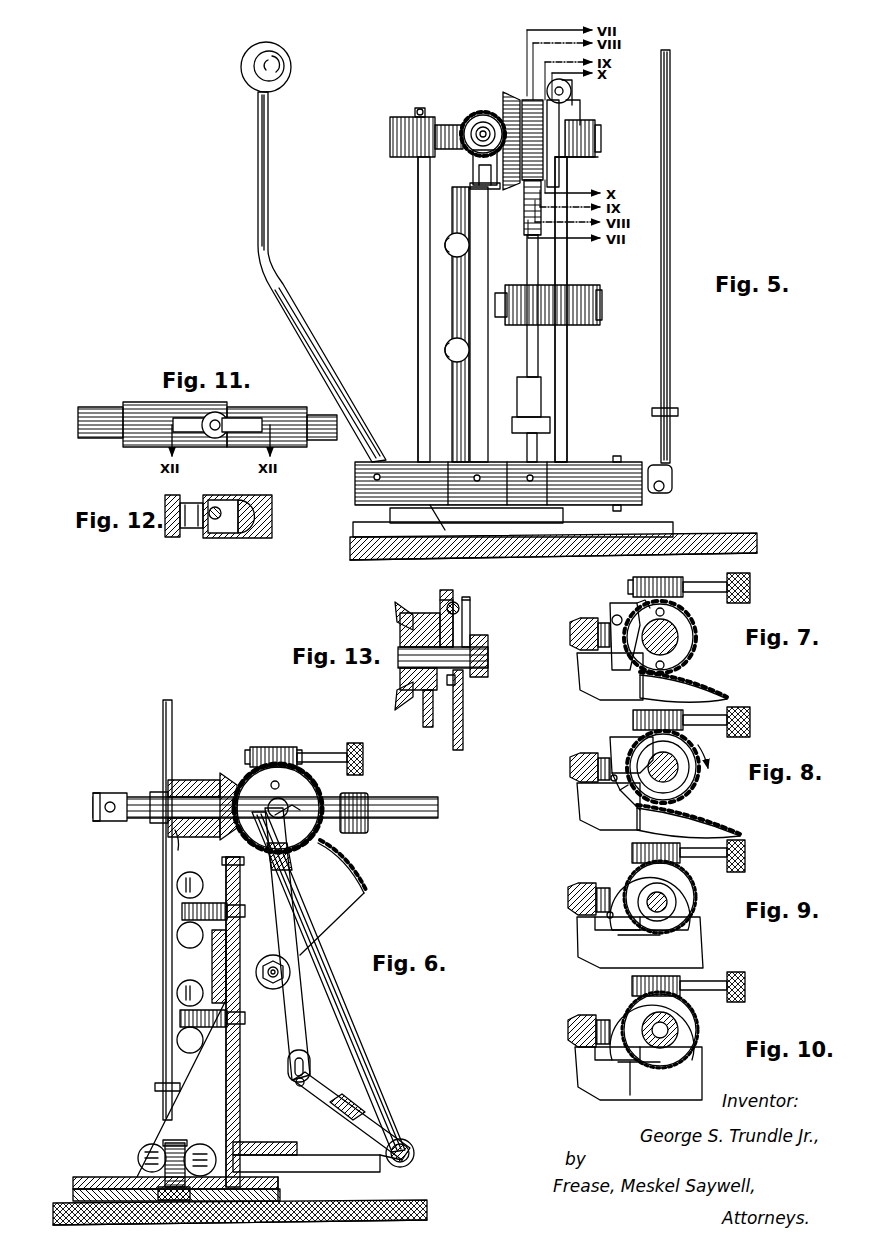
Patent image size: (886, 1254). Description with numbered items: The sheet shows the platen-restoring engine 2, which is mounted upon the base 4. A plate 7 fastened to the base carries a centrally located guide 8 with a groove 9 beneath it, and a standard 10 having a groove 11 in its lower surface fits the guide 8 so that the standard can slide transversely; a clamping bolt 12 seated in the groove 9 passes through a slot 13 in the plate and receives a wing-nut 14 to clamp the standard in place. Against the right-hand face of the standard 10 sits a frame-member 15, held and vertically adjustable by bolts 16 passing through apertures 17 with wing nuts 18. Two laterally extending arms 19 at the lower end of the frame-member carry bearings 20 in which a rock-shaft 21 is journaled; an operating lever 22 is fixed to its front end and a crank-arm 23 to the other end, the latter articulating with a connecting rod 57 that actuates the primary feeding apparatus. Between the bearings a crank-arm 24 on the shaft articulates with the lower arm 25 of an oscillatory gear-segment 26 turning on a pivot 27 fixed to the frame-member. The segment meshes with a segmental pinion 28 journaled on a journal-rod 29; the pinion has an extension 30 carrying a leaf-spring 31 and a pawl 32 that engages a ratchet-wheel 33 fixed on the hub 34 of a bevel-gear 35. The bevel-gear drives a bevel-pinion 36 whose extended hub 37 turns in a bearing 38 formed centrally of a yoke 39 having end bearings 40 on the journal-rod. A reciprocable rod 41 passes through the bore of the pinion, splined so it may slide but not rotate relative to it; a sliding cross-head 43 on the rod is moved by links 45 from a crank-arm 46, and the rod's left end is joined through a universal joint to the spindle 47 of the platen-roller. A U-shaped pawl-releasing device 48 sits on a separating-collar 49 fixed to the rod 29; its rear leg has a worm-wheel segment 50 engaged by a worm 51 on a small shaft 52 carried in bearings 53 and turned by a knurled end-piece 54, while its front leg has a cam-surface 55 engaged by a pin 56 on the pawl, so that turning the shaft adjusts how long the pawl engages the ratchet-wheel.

In FIG. 5, the engine 2 is at (400, 309).
In FIG. 6, the engine 2 is at (164, 1022).
In FIG. 5, the base 4 is at (752, 545).
In FIG. 6, the base 4 is at (432, 1213).
In FIG. 5, the plate 7 is at (700, 538).
In FIG. 6, the plate 7 is at (300, 1207).
In FIG. 5, the guide 8 is at (660, 522).
In FIG. 6, the guide 8 is at (280, 1183).
In FIG. 6, the groove 9 is at (135, 1192).
In FIG. 5, the standard 10 is at (505, 523).
In FIG. 6, the standard 10 is at (200, 1100).
In FIG. 6, the groove 11 is at (73, 1183).
In FIG. 6, the clamping bolt 12 is at (170, 1143).
In FIG. 6, the slot 13 is at (240, 1142).
In FIG. 6, the wing-nut 14 is at (140, 1150).
In FIG. 5, the frame-member 15 is at (452, 298).
In FIG. 7, the frame-member 15 is at (582, 680).
In FIG. 8, the frame-member 15 is at (582, 815).
In FIG. 9, the frame-member 15 is at (586, 950).
In FIG. 10, the frame-member 15 is at (586, 1083).
In FIG. 6, the frame-member 15 is at (288, 1065).
In FIG. 5, the bolts 16 is at (445, 248).
In FIG. 6, the bolts 16 is at (182, 910).
In FIG. 6, the apertures 17 is at (212, 945).
In FIG. 6, the wing nuts 18 is at (177, 885).
In FIG. 5, the laterally extending arms 19 is at (418, 330).
In FIG. 6, the laterally extending arms 19 is at (355, 1172).
In FIG. 5, the bearings 20 is at (432, 505).
In FIG. 5, the rock-shaft 21 is at (355, 486).
In FIG. 6, the rock-shaft 21 is at (415, 1153).
In FIG. 5, the operating lever 22 is at (256, 150).
In FIG. 5, the crank-arm 23 is at (665, 465).
In FIG. 6, the crank-arm 23 is at (380, 1160).
In FIG. 5, the crank-arm 24 is at (542, 442).
In FIG. 6, the crank-arm 24 is at (360, 1118).
In FIG. 5, the lower arm 25 is at (540, 342).
In FIG. 6, the lower arm 25 is at (300, 1012).
In FIG. 5, the oscillatory gear-segment 26 is at (540, 262).
In FIG. 13, the oscillatory gear-segment 26 is at (428, 727).
In FIG. 7, the oscillatory gear-segment 26 is at (727, 690).
In FIG. 8, the oscillatory gear-segment 26 is at (735, 825).
In FIG. 6, the oscillatory gear-segment 26 is at (367, 893).
In FIG. 5, the pivot 27 is at (603, 305).
In FIG. 6, the pivot 27 is at (290, 968).
In FIG. 5, the segmental pinion 28 is at (536, 100).
In FIG. 13, the segmental pinion 28 is at (447, 598).
In FIG. 8, the segmental pinion 28 is at (700, 775).
In FIG. 5, the journal-rod 29 is at (604, 136).
In FIG. 13, the journal-rod 29 is at (488, 657).
In FIG. 7, the journal-rod 29 is at (700, 637).
In FIG. 8, the journal-rod 29 is at (680, 767).
In FIG. 9, the journal-rod 29 is at (668, 902).
In FIG. 10, the journal-rod 29 is at (678, 1030).
In FIG. 7, the extension 30 is at (636, 605).
In FIG. 8, the extension 30 is at (612, 782).
In FIG. 7, the leaf-spring 31 is at (610, 615).
In FIG. 8, the leaf-spring 31 is at (610, 748).
In FIG. 7, the pawl 32 is at (610, 650).
In FIG. 5, the ratchet-wheel 33 is at (527, 100).
In FIG. 13, the ratchet-wheel 33 is at (440, 600).
In FIG. 7, the ratchet-wheel 33 is at (697, 620).
In FIG. 13, the hub 34 is at (400, 673).
In FIG. 7, the hub 34 is at (690, 661).
In FIG. 5, the bevel-gear 35 is at (507, 100).
In FIG. 13, the bevel-gear 35 is at (397, 702).
In FIG. 6, the bevel-gear 35 is at (308, 770).
In FIG. 5, the bevel-pinion 36 is at (470, 115).
In FIG. 6, the bevel-pinion 36 is at (228, 773).
In FIG. 6, the extended hub 37 is at (202, 780).
In FIG. 6, the bearing 38 is at (185, 780).
In FIG. 5, the yoke 39 is at (442, 128).
In FIG. 7, the yoke 39 is at (570, 632).
In FIG. 8, the yoke 39 is at (570, 768).
In FIG. 9, the yoke 39 is at (568, 898).
In FIG. 10, the yoke 39 is at (568, 1033).
In FIG. 6, the yoke 39 is at (175, 835).
In FIG. 5, the end bearings 40 is at (395, 160).
In FIG. 5, the reciprocable rod 41 is at (478, 175).
In FIG. 11, the reciprocable rod 41 is at (325, 440).
In FIG. 6, the reciprocable rod 41 is at (435, 818).
In FIG. 6, the sliding cross-head 43 is at (368, 805).
In FIG. 6, the links 45 is at (310, 820).
In FIG. 5, the crank-arm 46 is at (470, 276).
In FIG. 6, the crank-arm 46 is at (362, 1048).
In FIG. 11, the spindle 47 is at (95, 407).
In FIG. 5, the pawl-releasing device 48 is at (560, 192).
In FIG. 13, the pawl-releasing device 48 is at (458, 750).
In FIG. 9, the pawl-releasing device 48 is at (625, 935).
In FIG. 10, the pawl-releasing device 48 is at (630, 1095).
In FIG. 5, the separating-collar 49 is at (582, 158).
In FIG. 13, the separating-collar 49 is at (488, 670).
In FIG. 9, the separating-collar 49 is at (690, 925).
In FIG. 10, the separating-collar 49 is at (660, 1095).
In FIG. 5, the worm-wheel segment 50 is at (571, 90).
In FIG. 13, the worm-wheel segment 50 is at (471, 612).
In FIG. 8, the worm-wheel segment 50 is at (697, 792).
In FIG. 9, the worm-wheel segment 50 is at (698, 910).
In FIG. 10, the worm-wheel segment 50 is at (700, 1048).
In FIG. 7, the worm 51 is at (662, 577).
In FIG. 8, the worm 51 is at (633, 720).
In FIG. 9, the worm 51 is at (632, 850).
In FIG. 10, the worm 51 is at (632, 986).
In FIG. 6, the worm 51 is at (278, 747).
In FIG. 5, the shaft 52 is at (575, 86).
In FIG. 13, the shaft 52 is at (472, 600).
In FIG. 7, the shaft 52 is at (705, 582).
In FIG. 8, the shaft 52 is at (710, 718).
In FIG. 9, the shaft 52 is at (715, 857).
In FIG. 10, the shaft 52 is at (715, 990).
In FIG. 6, the shaft 52 is at (347, 765).
In FIG. 7, the bearings 53 is at (640, 580).
In FIG. 6, the bearings 53 is at (260, 747).
In FIG. 5, the knurled end-piece 54 is at (582, 102).
In FIG. 7, the knurled end-piece 54 is at (750, 587).
In FIG. 8, the knurled end-piece 54 is at (750, 722).
In FIG. 9, the knurled end-piece 54 is at (747, 852).
In FIG. 10, the knurled end-piece 54 is at (747, 985).
In FIG. 6, the knurled end-piece 54 is at (363, 758).
In FIG. 13, the cam-surface 55 is at (458, 602).
In FIG. 8, the cam-surface 55 is at (614, 790).
In FIG. 9, the cam-surface 55 is at (618, 887).
In FIG. 8, the pin 56 is at (622, 828).
In FIG. 9, the pin 56 is at (607, 916).
In FIG. 5, the connecting rod 57 is at (670, 370).
In FIG. 6, the connecting rod 57 is at (163, 706).